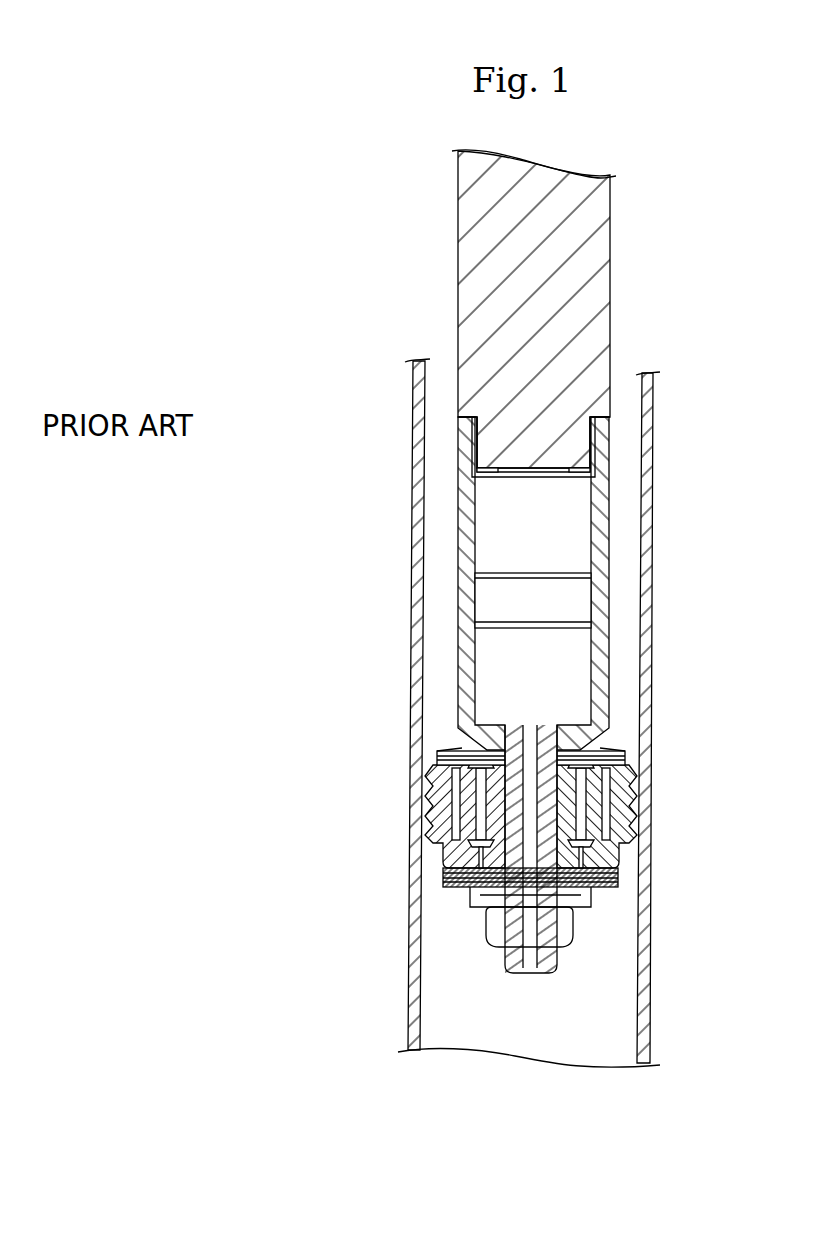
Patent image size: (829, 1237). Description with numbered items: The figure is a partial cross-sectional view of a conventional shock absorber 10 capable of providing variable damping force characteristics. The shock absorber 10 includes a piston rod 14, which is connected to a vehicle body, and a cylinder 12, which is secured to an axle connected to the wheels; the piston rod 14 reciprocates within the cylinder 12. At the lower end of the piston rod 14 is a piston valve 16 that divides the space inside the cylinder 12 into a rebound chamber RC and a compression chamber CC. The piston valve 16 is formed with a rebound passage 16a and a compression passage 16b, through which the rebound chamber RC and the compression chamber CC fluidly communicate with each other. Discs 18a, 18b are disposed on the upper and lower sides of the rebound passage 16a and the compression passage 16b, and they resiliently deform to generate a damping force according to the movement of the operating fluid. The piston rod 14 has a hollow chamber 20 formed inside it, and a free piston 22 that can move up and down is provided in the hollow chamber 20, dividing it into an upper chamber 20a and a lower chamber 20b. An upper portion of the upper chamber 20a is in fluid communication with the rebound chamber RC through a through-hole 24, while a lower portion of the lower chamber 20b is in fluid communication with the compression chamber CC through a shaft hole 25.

The shock absorber 10 is at (517, 608).
The cylinder 12 is at (650, 436).
The piston rod 14 is at (623, 538).
The piston valve 16 is at (565, 808).
The rebound passage 16a is at (633, 827).
The compression passage 16b is at (635, 807).
The disc 18a is at (605, 757).
The disc 18b is at (613, 888).
The hollow chamber 20 is at (446, 600).
The upper chamber 20a is at (488, 551).
The lower chamber 20b is at (488, 654).
The free piston 22 is at (590, 597).
The through-hole 24 is at (607, 480).
The shaft hole 25 is at (557, 965).
The rebound chamber RC is at (430, 460).
The compression chamber CC is at (442, 983).